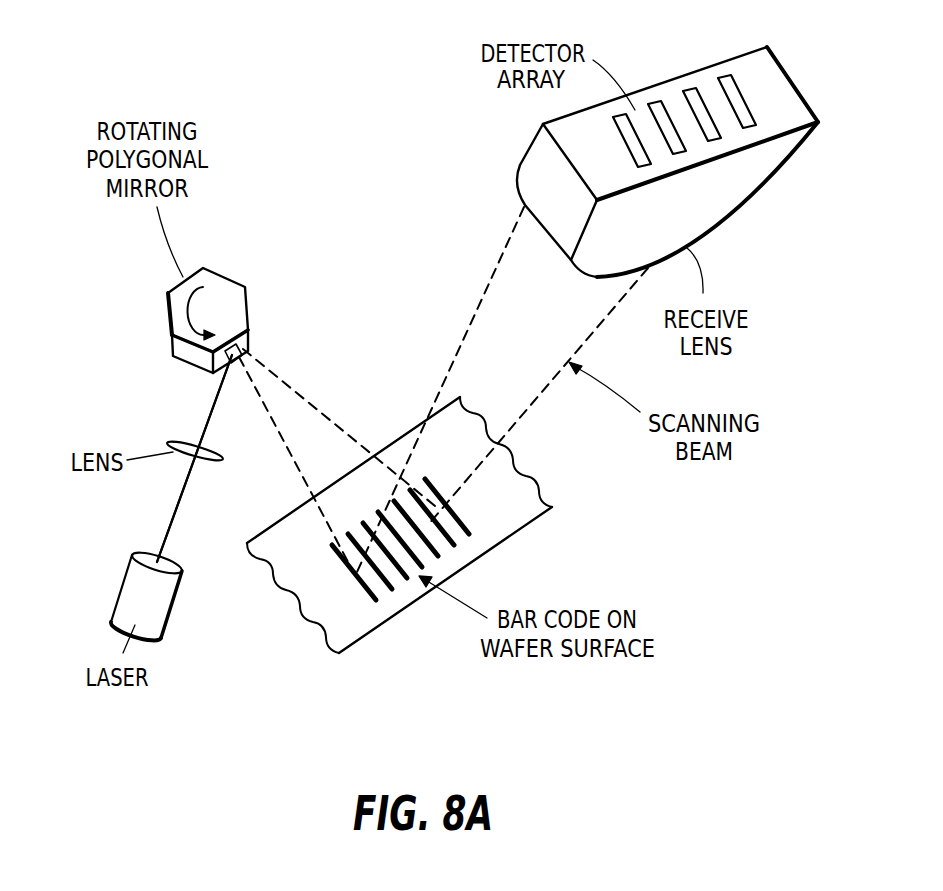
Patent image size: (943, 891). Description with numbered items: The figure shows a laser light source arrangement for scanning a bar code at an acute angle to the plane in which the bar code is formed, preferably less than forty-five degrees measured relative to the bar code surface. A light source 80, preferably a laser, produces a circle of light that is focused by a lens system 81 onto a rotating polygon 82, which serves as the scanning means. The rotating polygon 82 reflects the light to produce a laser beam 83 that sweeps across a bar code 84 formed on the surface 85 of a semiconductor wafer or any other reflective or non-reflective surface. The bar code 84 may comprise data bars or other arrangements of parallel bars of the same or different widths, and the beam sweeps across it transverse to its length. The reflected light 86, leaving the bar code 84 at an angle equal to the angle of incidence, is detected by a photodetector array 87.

The light source 80 is at (135, 583).
The lens system 81 is at (173, 440).
The rotating polygon 82 is at (223, 273).
The laser beam 83 is at (297, 388).
The bar code 84 is at (363, 590).
The surface 85 is at (533, 507).
The reflected light 86 is at (488, 285).
The photodetector array 87 is at (700, 67).